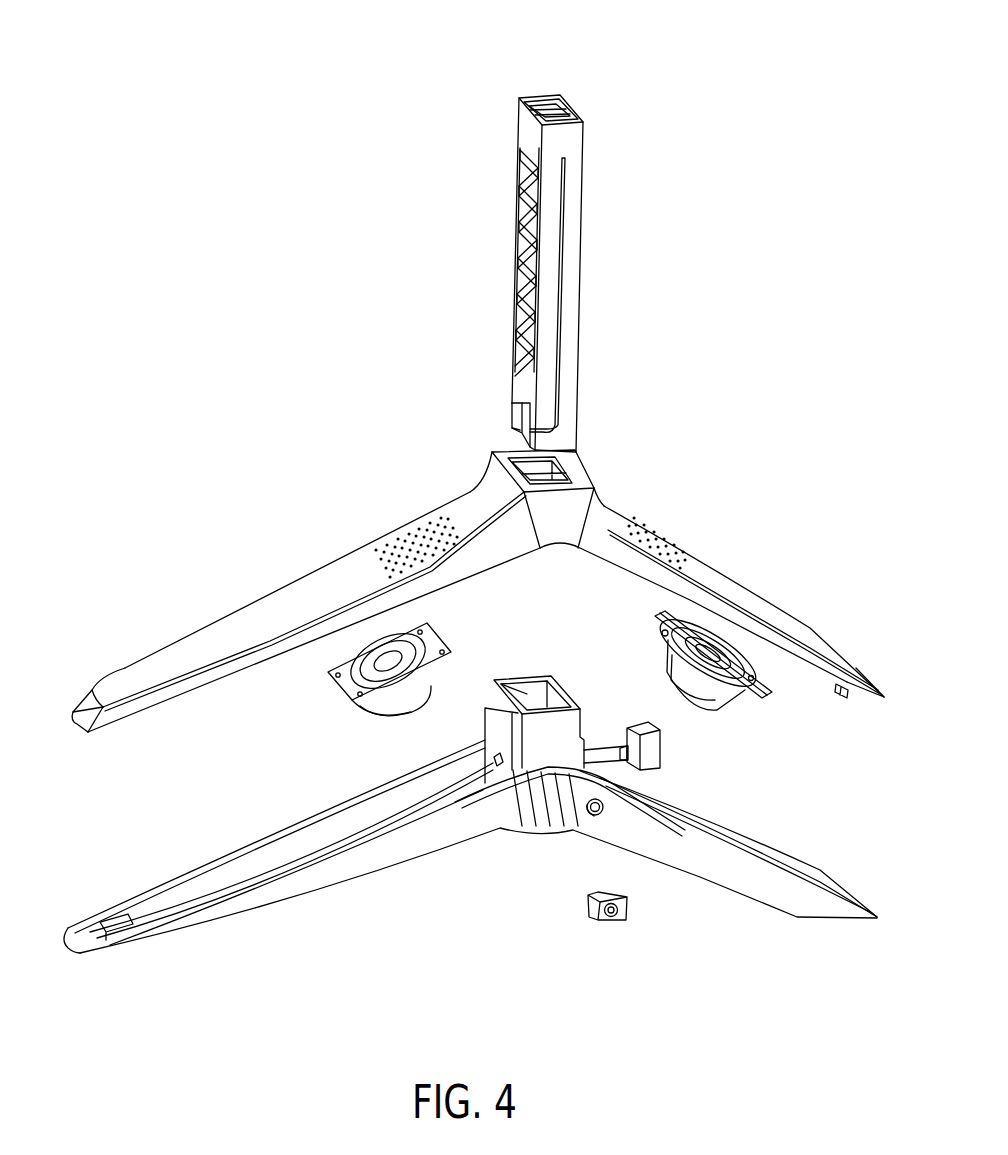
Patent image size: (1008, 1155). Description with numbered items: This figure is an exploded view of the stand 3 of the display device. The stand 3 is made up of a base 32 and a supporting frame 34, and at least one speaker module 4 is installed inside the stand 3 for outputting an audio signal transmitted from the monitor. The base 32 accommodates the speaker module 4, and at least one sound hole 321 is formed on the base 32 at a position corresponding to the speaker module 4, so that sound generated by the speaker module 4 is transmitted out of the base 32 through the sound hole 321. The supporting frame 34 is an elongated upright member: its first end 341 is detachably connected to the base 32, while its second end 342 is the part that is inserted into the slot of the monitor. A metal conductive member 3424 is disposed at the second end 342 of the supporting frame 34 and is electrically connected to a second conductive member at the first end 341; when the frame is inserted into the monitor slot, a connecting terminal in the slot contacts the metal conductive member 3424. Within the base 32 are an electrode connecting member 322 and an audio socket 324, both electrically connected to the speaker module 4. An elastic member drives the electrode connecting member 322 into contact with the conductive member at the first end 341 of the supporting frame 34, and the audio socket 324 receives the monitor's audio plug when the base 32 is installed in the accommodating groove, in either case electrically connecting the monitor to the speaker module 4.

The stand 3 is at (735, 80).
The supporting frame 34 is at (645, 268).
The second end 342 is at (572, 138).
The metal conductive member 3424 is at (549, 103).
The first end 341 is at (572, 428).
The base 32 is at (802, 777).
The sound hole 321 is at (400, 535).
The electrode connecting member 322 is at (638, 722).
The audio socket 324 is at (612, 922).
The speaker module 4 is at (386, 704).